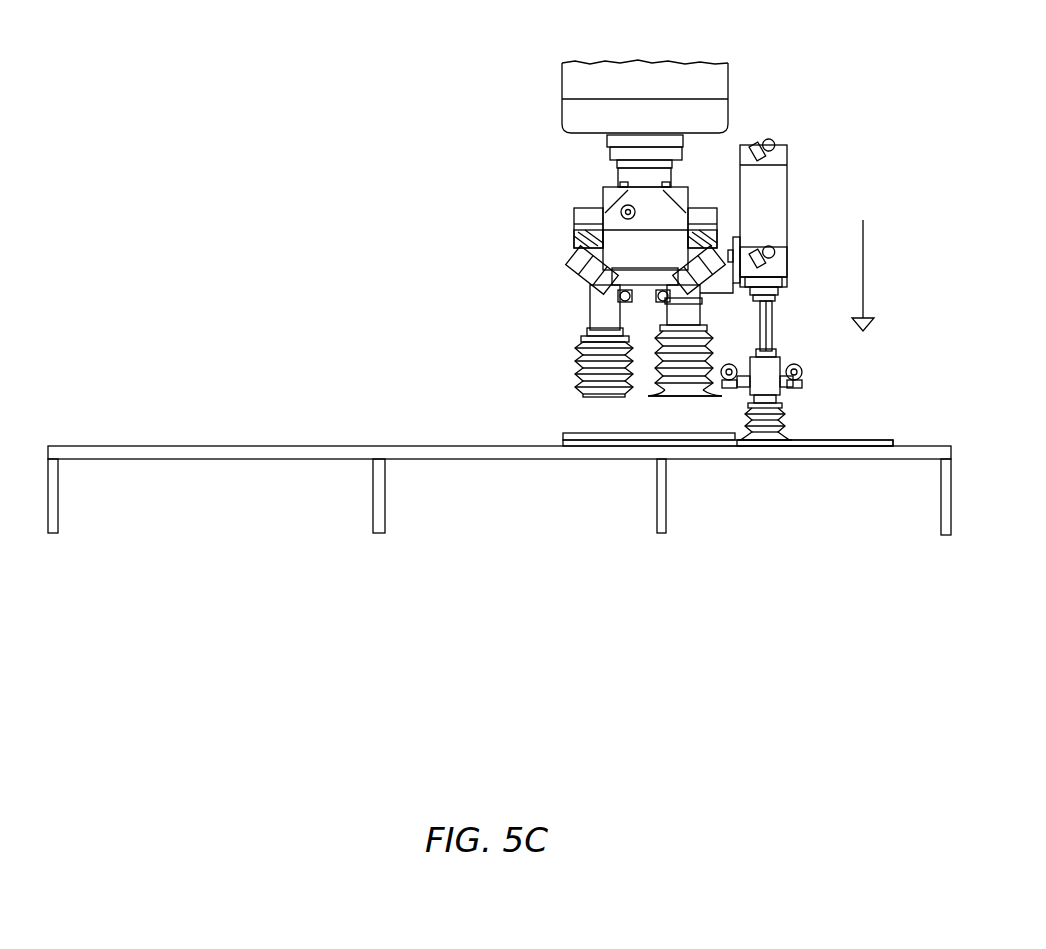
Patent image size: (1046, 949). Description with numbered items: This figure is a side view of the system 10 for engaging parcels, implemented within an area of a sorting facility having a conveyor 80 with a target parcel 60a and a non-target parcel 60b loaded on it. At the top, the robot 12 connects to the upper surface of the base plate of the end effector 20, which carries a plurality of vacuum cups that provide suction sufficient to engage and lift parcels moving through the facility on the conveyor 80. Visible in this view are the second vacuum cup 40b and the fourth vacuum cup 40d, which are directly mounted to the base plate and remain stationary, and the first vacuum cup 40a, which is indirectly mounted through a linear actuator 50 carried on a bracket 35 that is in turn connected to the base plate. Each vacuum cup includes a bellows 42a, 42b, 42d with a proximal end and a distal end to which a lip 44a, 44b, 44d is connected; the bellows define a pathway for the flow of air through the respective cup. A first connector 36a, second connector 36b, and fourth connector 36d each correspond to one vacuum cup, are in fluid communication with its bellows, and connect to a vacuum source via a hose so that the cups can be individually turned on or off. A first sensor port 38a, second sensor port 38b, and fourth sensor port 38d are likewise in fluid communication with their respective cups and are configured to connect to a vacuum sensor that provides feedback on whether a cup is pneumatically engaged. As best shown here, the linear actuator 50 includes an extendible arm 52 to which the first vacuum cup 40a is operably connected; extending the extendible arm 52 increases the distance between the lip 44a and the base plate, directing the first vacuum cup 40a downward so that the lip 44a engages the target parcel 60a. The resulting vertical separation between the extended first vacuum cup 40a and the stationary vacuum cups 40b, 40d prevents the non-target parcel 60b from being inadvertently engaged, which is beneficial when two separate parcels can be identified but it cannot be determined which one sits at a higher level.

The system 10 is at (540, 136).
The robot 12 is at (650, 137).
The end effector 20 is at (522, 295).
The bracket 35 is at (790, 285).
The first connector 36a is at (728, 364).
The second connector 36b is at (712, 210).
The fourth connector 36d is at (575, 215).
The first sensor port 38a is at (798, 364).
The second sensor port 38b is at (740, 245).
The fourth sensor port 38d is at (578, 262).
The first vacuum cup 40a is at (765, 410).
The second vacuum cup 40b is at (641, 287).
The fourth vacuum cup 40d is at (578, 342).
The bellows 42a is at (780, 425).
The bellows 42b is at (665, 398).
The bellows 42d is at (577, 366).
The lip 44a is at (790, 438).
The lip 44b is at (678, 400).
The lip 44d is at (594, 397).
The linear actuator 50 is at (777, 192).
The extendible arm 52 is at (775, 318).
The target parcel 60a is at (790, 447).
The non-target parcel 60b is at (665, 442).
The conveyor 80 is at (273, 452).